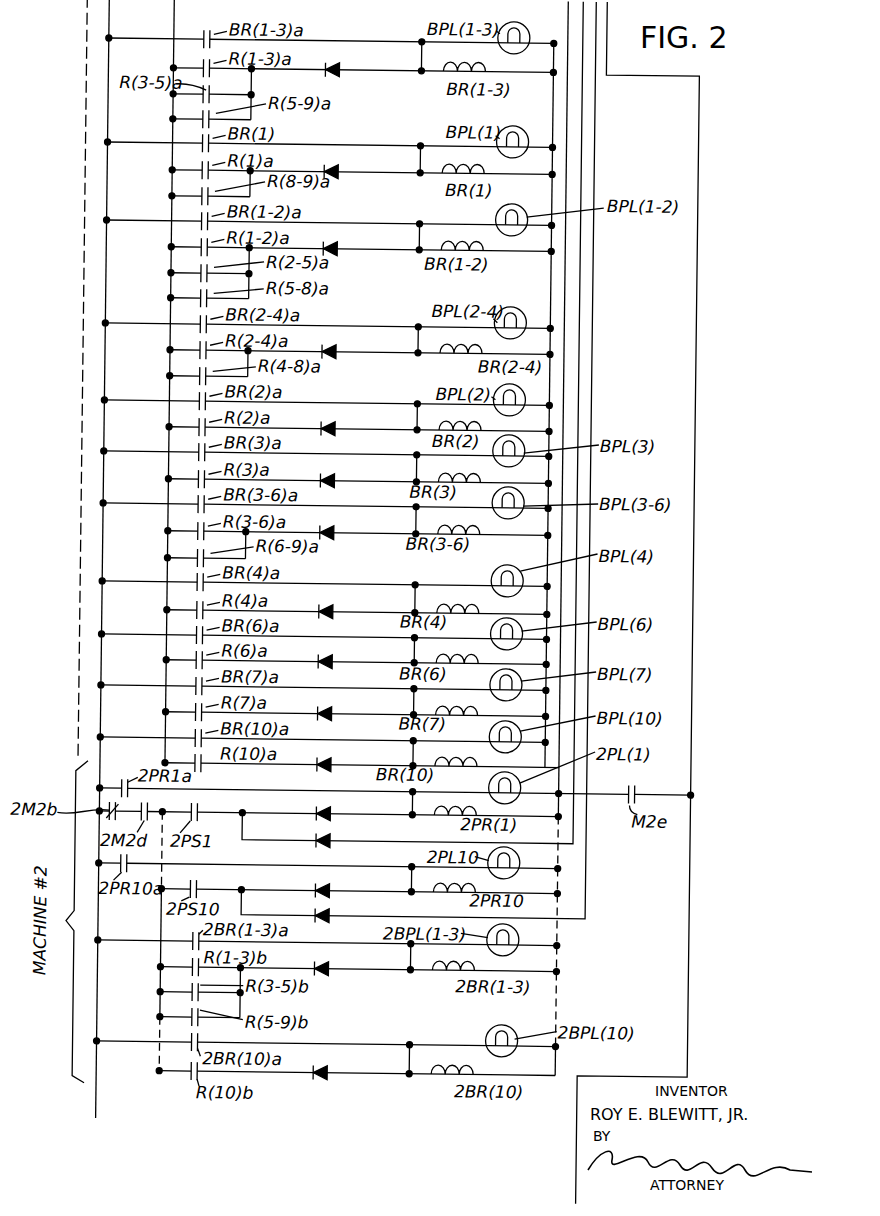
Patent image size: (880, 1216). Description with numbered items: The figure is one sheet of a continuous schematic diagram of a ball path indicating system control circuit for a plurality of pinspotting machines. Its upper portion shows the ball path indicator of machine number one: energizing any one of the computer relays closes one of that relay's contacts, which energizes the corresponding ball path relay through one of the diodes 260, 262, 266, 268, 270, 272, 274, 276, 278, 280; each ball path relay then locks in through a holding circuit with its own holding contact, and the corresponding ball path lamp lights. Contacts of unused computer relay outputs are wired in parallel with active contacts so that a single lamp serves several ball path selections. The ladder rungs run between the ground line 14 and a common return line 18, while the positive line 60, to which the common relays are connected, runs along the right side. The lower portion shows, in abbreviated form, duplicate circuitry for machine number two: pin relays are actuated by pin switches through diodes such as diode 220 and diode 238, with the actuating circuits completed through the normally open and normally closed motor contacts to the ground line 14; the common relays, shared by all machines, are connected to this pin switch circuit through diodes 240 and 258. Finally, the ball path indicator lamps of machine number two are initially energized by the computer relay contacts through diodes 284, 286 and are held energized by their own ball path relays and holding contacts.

The ground line 14 is at (100, 85).
The common return line 18 is at (547, 113).
The positive line 60 is at (700, 136).
The diode 220 is at (330, 810).
The diode 238 is at (330, 887).
The diode 240 is at (330, 837).
The diode 258 is at (330, 912).
The diode 260 is at (333, 66).
The diode 262 is at (333, 168).
The diode 266 is at (333, 348).
The diode 268 is at (333, 425).
The diode 270 is at (333, 477).
The diode 272 is at (333, 529).
The diode 274 is at (333, 608).
The diode 276 is at (333, 658).
The diode 278 is at (333, 710).
The diode 280 is at (333, 761).
The diode 284 is at (325, 965).
The diode 286 is at (324, 1080).